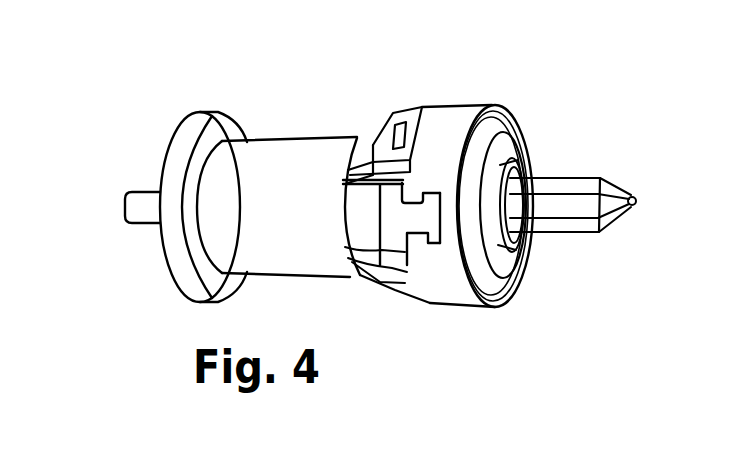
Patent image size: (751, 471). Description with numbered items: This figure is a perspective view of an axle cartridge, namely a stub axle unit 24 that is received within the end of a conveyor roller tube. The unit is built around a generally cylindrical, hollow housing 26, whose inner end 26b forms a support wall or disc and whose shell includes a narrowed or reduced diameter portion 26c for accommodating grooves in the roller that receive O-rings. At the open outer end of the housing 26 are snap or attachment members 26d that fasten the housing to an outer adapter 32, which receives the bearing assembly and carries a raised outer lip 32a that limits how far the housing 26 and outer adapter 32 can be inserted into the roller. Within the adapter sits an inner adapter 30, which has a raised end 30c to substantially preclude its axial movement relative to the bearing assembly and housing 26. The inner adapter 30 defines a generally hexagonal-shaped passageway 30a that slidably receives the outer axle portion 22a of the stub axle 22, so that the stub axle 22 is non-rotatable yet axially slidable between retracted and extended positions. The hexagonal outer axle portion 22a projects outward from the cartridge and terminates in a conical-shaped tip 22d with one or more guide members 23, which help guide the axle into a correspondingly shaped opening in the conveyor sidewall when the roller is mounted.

The stub axle 22 is at (578, 143).
The outer axle portion 22a is at (580, 176).
The conical-shaped tip 22d is at (610, 187).
The guide member 23 is at (612, 217).
The stub axle unit 24 is at (222, 66).
The housing 26 is at (312, 99).
The inner end 26b is at (162, 153).
The reduced diameter portion 26c is at (282, 262).
The snap member 26d is at (433, 300).
The inner adapter 30 is at (500, 253).
The hexagonal-shaped passageway 30a is at (513, 207).
The raised end 30c is at (498, 130).
The outer adapter 32 is at (457, 306).
The raised outer lip 32a is at (472, 143).